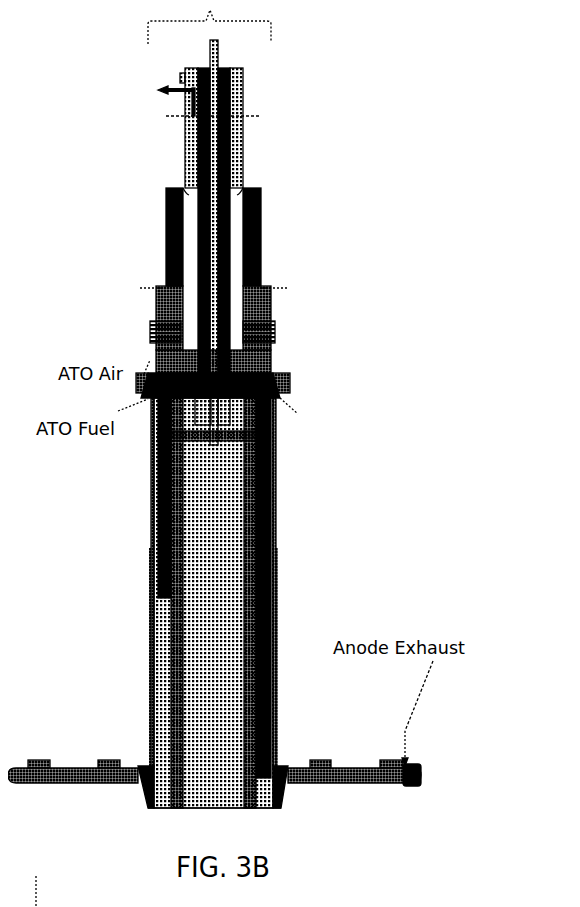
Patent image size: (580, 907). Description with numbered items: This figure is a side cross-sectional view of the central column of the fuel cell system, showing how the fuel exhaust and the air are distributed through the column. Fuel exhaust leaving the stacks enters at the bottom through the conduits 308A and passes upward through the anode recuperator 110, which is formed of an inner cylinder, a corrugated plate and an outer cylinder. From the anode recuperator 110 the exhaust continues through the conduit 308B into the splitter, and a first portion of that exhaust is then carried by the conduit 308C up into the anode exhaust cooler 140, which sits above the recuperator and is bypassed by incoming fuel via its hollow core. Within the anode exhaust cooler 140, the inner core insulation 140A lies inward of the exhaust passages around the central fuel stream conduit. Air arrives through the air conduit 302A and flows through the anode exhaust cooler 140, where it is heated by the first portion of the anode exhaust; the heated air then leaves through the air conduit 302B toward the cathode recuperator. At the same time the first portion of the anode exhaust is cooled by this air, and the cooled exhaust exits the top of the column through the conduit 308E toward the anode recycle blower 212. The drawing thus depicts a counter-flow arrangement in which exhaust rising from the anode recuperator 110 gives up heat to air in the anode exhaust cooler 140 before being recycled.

The upper conduit / anode recycle outlet pipe 308E is at (237, 130).
The anode recycle blower 212 is at (119, 90).
The air conduit 302A is at (163, 180).
The air conduit 302B is at (158, 269).
The anode exhaust cooler 140 is at (258, 232).
The anode exhaust cooler inner core insulation 140A is at (232, 268).
The conduit 308C is at (263, 298).
The conduit 308B is at (267, 430).
The anode recuperator 110 is at (267, 513).
The conduits 308A is at (340, 772).